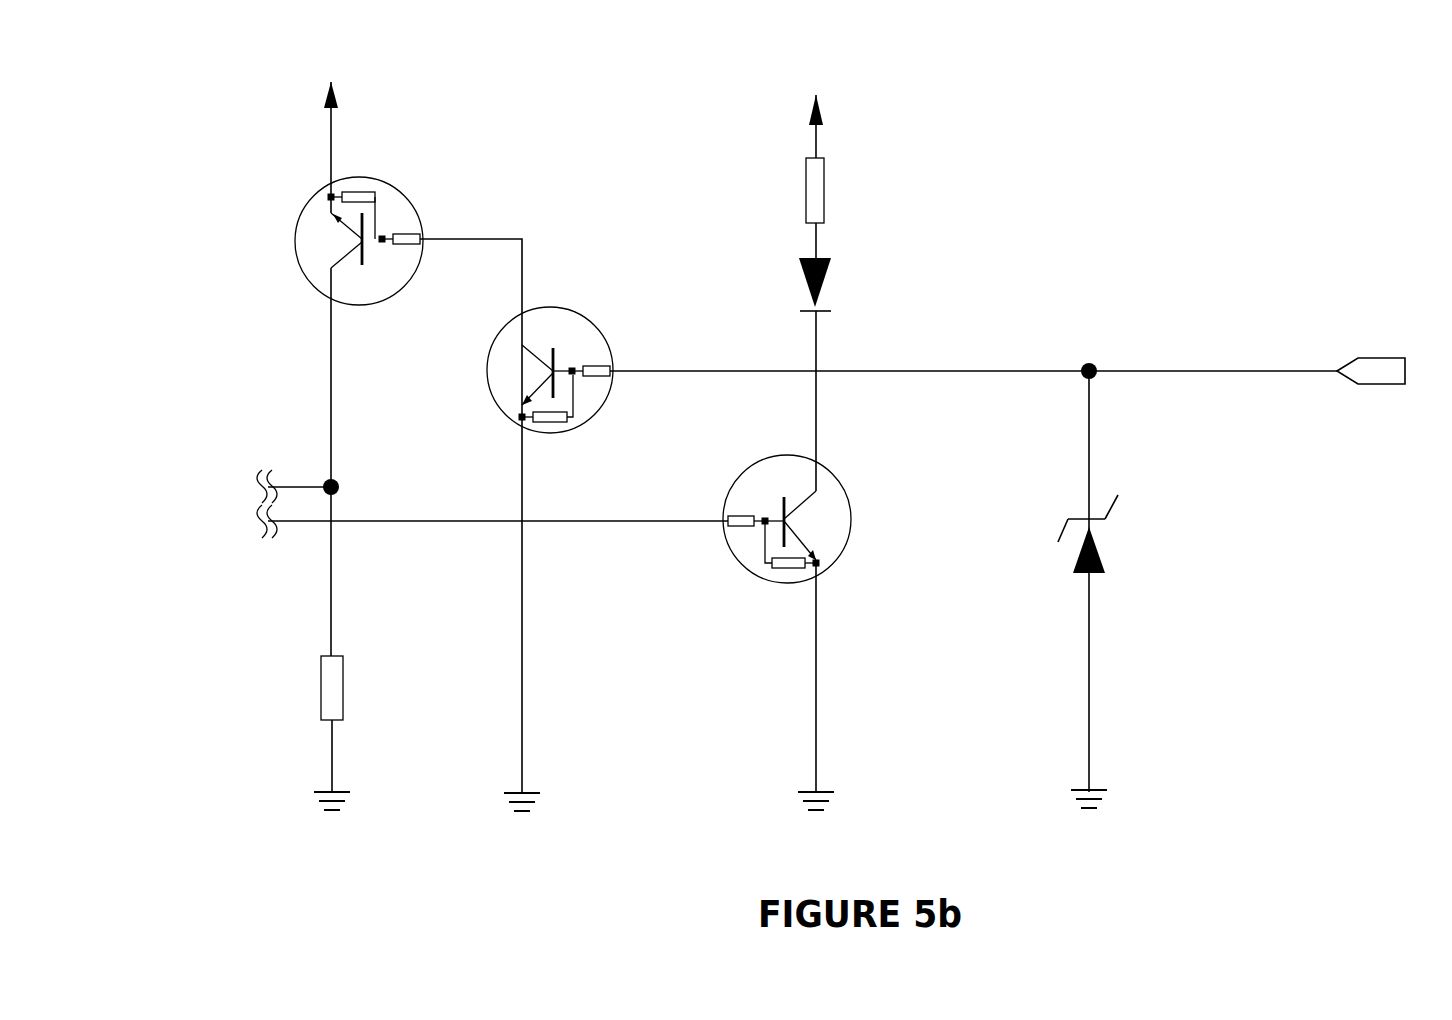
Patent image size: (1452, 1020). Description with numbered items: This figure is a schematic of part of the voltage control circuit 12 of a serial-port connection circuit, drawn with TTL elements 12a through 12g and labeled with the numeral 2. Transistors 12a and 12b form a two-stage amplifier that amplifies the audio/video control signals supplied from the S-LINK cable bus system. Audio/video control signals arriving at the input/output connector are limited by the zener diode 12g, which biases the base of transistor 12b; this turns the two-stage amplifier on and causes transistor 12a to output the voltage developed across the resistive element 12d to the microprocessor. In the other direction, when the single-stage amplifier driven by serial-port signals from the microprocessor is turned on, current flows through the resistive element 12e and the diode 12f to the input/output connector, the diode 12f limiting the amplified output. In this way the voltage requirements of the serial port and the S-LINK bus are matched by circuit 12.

The circuit board 2 is at (259, 85).
The voltage control circuit 12 is at (677, 152).
The transistor 12a is at (375, 177).
The transistor 12b is at (570, 307).
The resistive element 12d is at (320, 718).
The resistive element 12e is at (820, 158).
The diode 12f is at (808, 293).
The zener diode 12g is at (1105, 573).